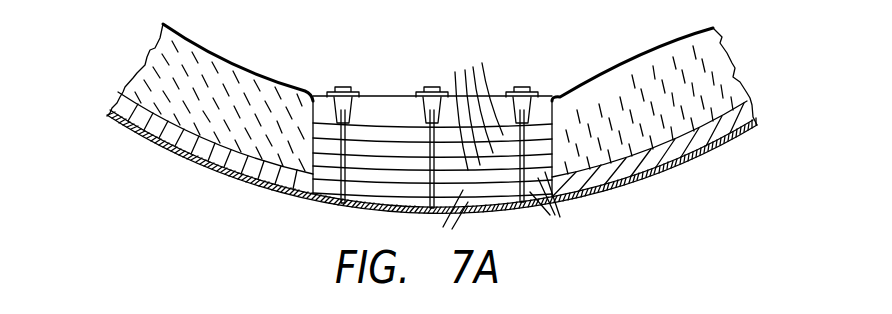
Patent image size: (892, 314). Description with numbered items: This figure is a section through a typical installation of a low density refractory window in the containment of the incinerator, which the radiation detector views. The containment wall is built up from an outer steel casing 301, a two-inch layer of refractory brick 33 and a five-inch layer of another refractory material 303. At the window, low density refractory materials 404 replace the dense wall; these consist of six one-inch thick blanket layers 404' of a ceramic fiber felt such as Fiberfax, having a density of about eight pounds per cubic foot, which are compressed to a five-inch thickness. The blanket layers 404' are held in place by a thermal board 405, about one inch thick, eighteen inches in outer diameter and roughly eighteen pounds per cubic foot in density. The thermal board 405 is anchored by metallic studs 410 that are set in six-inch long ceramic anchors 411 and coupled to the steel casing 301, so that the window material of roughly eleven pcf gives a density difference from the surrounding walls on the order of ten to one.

The steel casing 301 is at (148, 138).
The layer of another refractory material 303 is at (198, 156).
The layer of refractory brick 33 is at (236, 167).
The thermal board 405 is at (388, 107).
The low density refractory materials 404 is at (432, 189).
The blanket layers 404' is at (500, 141).
The ceramic anchors 411 is at (338, 88).
The metallic studs 410 is at (338, 188).